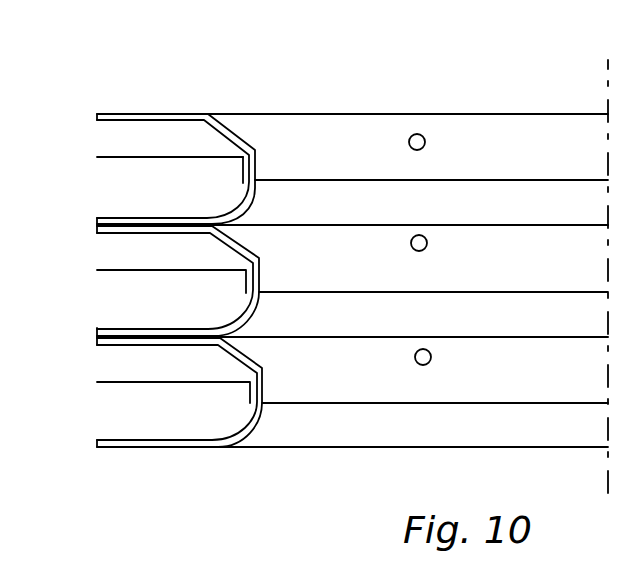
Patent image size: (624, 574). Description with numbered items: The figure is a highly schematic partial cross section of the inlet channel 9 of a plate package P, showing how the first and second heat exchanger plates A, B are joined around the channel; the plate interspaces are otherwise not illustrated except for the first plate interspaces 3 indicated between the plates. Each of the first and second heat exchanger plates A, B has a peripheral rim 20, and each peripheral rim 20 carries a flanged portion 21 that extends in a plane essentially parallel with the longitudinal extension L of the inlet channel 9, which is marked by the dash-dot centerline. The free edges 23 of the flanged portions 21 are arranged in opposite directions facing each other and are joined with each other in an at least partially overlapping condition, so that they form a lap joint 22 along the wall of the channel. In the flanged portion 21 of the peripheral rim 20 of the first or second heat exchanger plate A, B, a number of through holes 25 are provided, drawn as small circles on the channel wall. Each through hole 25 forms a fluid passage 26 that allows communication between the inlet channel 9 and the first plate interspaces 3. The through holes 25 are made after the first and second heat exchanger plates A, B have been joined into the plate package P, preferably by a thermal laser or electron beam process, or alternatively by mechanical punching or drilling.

The first plate interspace 3 is at (143, 172).
The inlet channel 9 is at (543, 148).
The peripheral rim 20 is at (242, 125).
The flanged portion 21 is at (225, 200).
The lap joint 22 is at (257, 176).
The free edge 23 is at (238, 158).
The through hole 25 is at (423, 357).
The fluid passage 26 is at (425, 365).
The first heat exchanger plate A is at (100, 113).
The second heat exchanger plate B is at (98, 233).
The plate package P is at (456, 88).
The longitudinal extension L is at (609, 294).